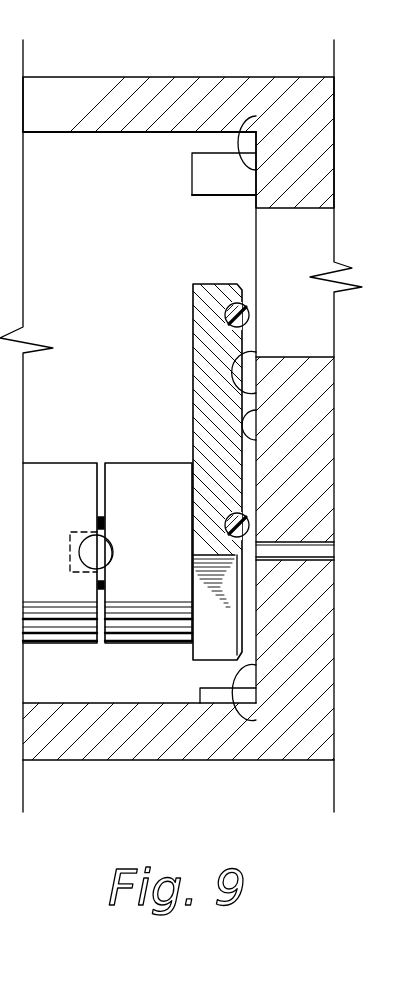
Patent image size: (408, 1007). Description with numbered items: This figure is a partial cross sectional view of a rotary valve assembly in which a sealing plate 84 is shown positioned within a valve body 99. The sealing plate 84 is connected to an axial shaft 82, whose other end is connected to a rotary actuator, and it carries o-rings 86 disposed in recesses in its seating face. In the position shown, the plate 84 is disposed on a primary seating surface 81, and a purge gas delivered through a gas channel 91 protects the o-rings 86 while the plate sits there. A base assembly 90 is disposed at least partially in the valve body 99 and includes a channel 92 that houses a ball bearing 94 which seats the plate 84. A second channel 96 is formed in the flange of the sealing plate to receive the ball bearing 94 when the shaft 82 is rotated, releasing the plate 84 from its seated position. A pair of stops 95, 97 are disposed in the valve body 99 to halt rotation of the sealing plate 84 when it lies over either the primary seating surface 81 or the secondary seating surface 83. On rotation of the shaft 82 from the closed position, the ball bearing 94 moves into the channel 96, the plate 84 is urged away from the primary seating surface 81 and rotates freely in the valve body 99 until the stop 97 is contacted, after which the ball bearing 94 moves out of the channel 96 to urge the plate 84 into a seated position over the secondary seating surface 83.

The valve body 99 is at (154, 77).
The primary seating surface 81 is at (248, 116).
The stop 95 is at (192, 177).
The o-ring 86 is at (249, 317).
The sealing plate 84 is at (193, 353).
The secondary seating surface 83 is at (248, 409).
The base assembly 90 is at (55, 463).
The channel 92 is at (72, 533).
The axial shaft 82 is at (102, 516).
The ball bearing 94 is at (106, 552).
The second channel 96 is at (110, 567).
The gas channel 91 is at (318, 563).
The stop 97 is at (223, 698).